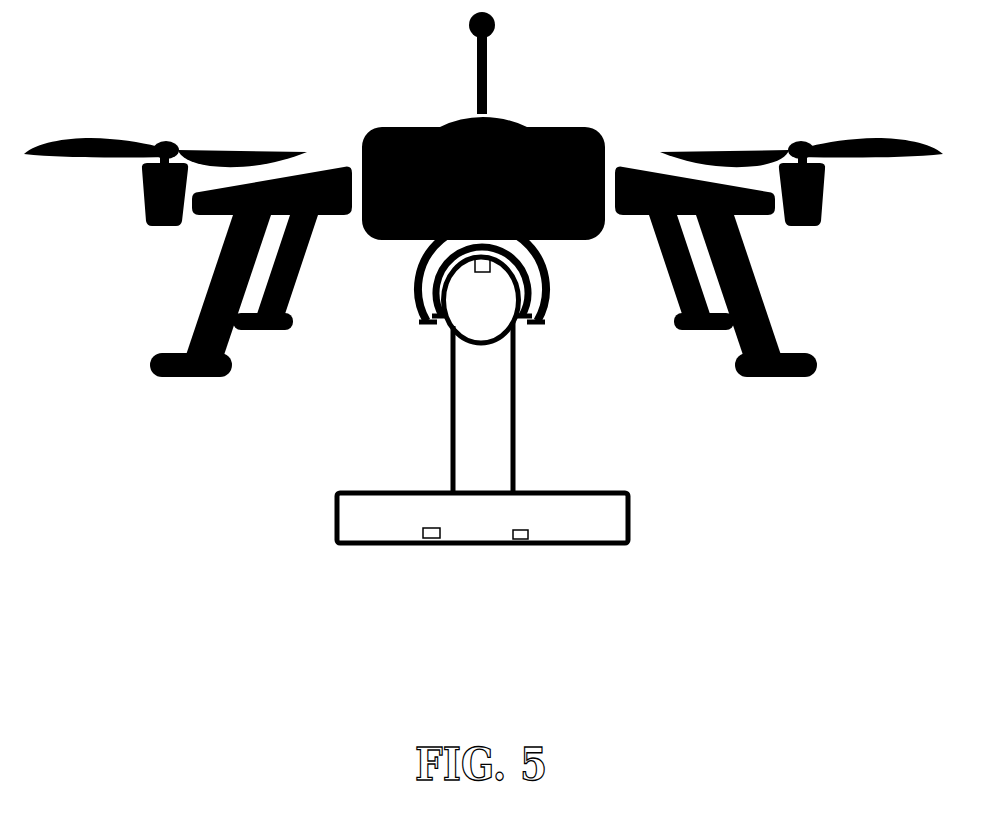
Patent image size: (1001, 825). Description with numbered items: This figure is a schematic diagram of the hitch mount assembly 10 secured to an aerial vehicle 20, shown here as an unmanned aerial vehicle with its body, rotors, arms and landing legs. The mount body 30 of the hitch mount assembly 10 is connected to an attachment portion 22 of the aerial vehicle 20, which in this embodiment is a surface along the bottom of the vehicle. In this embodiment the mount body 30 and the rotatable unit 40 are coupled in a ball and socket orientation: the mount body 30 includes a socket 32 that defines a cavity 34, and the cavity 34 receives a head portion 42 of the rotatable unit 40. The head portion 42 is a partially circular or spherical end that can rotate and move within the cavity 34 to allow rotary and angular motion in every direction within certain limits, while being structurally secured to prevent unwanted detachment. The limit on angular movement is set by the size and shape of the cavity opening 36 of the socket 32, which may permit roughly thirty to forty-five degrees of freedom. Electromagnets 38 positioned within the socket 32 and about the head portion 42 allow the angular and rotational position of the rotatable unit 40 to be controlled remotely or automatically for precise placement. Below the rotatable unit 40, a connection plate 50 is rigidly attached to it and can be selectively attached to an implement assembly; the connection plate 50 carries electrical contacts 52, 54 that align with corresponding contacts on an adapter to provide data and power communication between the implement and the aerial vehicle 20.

The hitch mount assembly 10 is at (483, 277).
The aerial vehicle 20 is at (552, 137).
The attachment portion 22 is at (490, 236).
The mount body 30 is at (420, 273).
The socket 32 is at (432, 252).
The cavity 34 is at (427, 320).
The cavity opening 36 is at (533, 323).
The electromagnets 38 is at (492, 262).
The rotatable unit 40 is at (502, 402).
The head portion 42 is at (490, 310).
The connection plate 50 is at (628, 497).
The electrical contact 52 is at (423, 530).
The electrical contact 54 is at (515, 533).